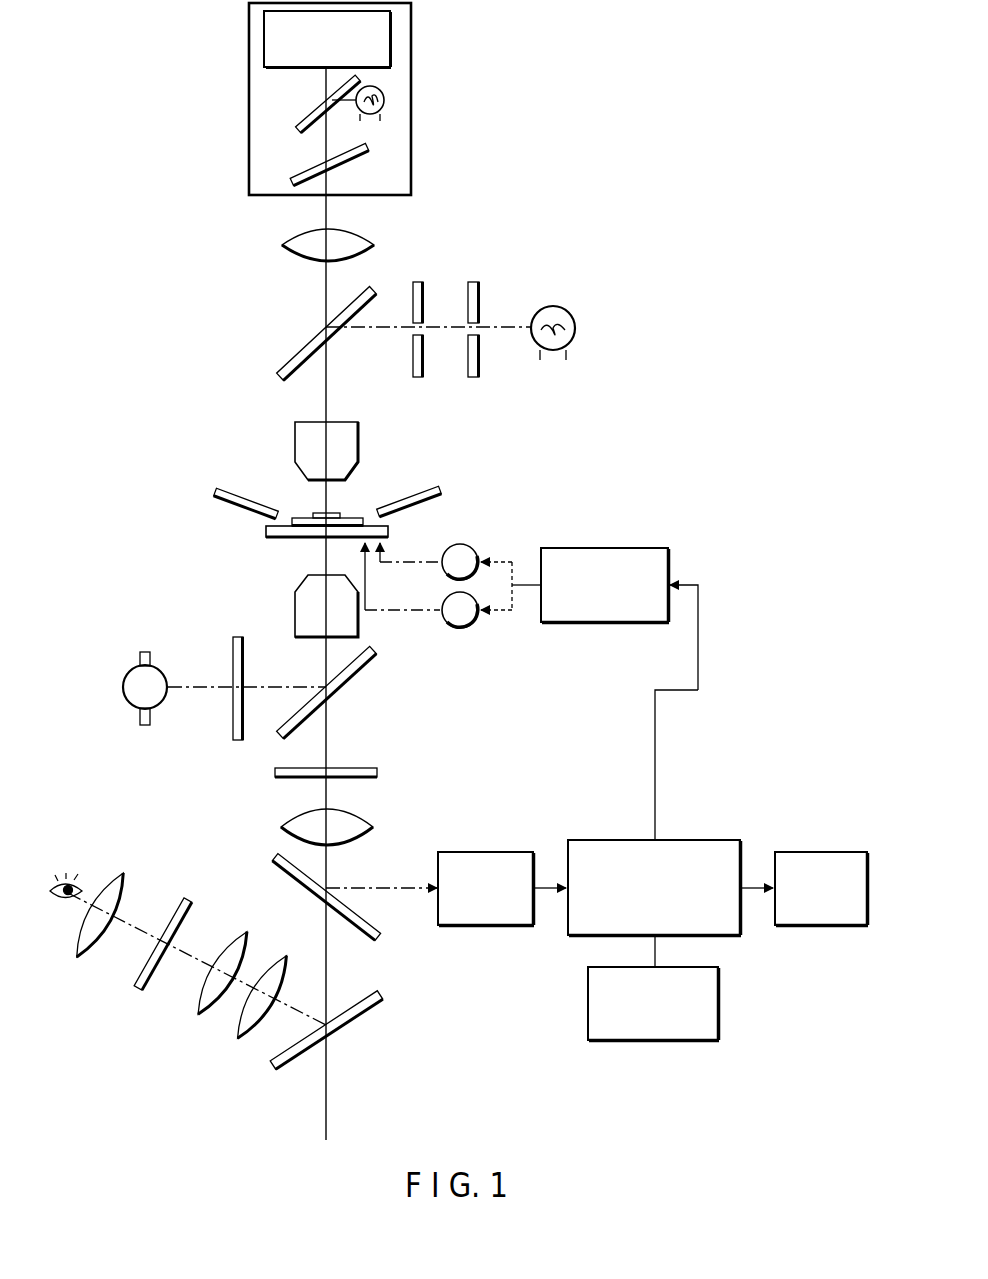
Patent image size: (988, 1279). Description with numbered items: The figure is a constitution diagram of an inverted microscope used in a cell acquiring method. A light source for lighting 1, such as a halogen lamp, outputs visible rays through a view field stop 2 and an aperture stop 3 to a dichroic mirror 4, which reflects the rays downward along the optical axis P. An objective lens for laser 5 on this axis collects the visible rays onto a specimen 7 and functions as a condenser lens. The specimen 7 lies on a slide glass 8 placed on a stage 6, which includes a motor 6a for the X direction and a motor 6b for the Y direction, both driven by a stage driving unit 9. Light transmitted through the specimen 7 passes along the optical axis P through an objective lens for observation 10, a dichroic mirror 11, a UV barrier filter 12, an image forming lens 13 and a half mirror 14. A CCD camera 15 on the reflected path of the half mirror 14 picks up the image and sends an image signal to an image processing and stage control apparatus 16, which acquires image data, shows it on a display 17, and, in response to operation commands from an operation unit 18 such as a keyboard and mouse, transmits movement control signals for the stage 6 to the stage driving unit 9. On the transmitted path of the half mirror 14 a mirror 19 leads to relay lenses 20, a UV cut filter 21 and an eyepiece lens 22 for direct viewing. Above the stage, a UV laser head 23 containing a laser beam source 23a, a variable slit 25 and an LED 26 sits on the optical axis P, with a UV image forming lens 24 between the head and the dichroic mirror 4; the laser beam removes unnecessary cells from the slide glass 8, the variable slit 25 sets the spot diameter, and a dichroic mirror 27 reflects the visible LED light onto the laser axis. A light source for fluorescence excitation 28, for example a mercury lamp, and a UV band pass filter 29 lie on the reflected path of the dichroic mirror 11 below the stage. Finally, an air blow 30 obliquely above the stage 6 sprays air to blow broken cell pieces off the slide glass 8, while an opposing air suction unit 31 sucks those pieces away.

The light source for lighting 1 is at (553, 306).
The view field stop 2 is at (473, 282).
The aperture stop 3 is at (418, 282).
The dichroic mirror 4 is at (290, 358).
The optical axis P is at (328, 382).
The objective lens for laser 5 is at (297, 440).
The stage 6 is at (390, 530).
The motor of the X direction 6a is at (462, 545).
The motor of the Y direction 6b is at (462, 627).
The specimen 7 is at (315, 515).
The slide glass 8 is at (350, 520).
The stage driving unit 9 is at (603, 548).
The objective lens for observation 10 is at (298, 607).
The dichroic mirror 11 is at (358, 672).
The UV barrier filter 12 is at (380, 772).
The image forming lens 13 is at (375, 827).
The half mirror 14 is at (377, 925).
The CCD camera 15 is at (500, 852).
The image processing and stage control apparatus 16 is at (608, 840).
The display 17 is at (817, 852).
The operation unit 18 is at (720, 1003).
The mirror 19 is at (360, 1017).
The relay lenses 20 is at (252, 1046).
The UV cut filter 21 is at (140, 993).
The eyepiece lens 22 is at (90, 953).
The UV laser head 23 is at (398, 67).
The laser beam source 23a is at (264, 48).
The UV image forming lens 24 is at (367, 232).
The variable slit 25 is at (295, 172).
The LED 26 is at (384, 100).
The dichroic mirror 27 is at (300, 117).
The light source for fluorescence excitation 28 is at (132, 695).
The UV band pass filter 29 is at (238, 740).
The air blow 30 is at (427, 487).
The air suction unit 31 is at (225, 505).